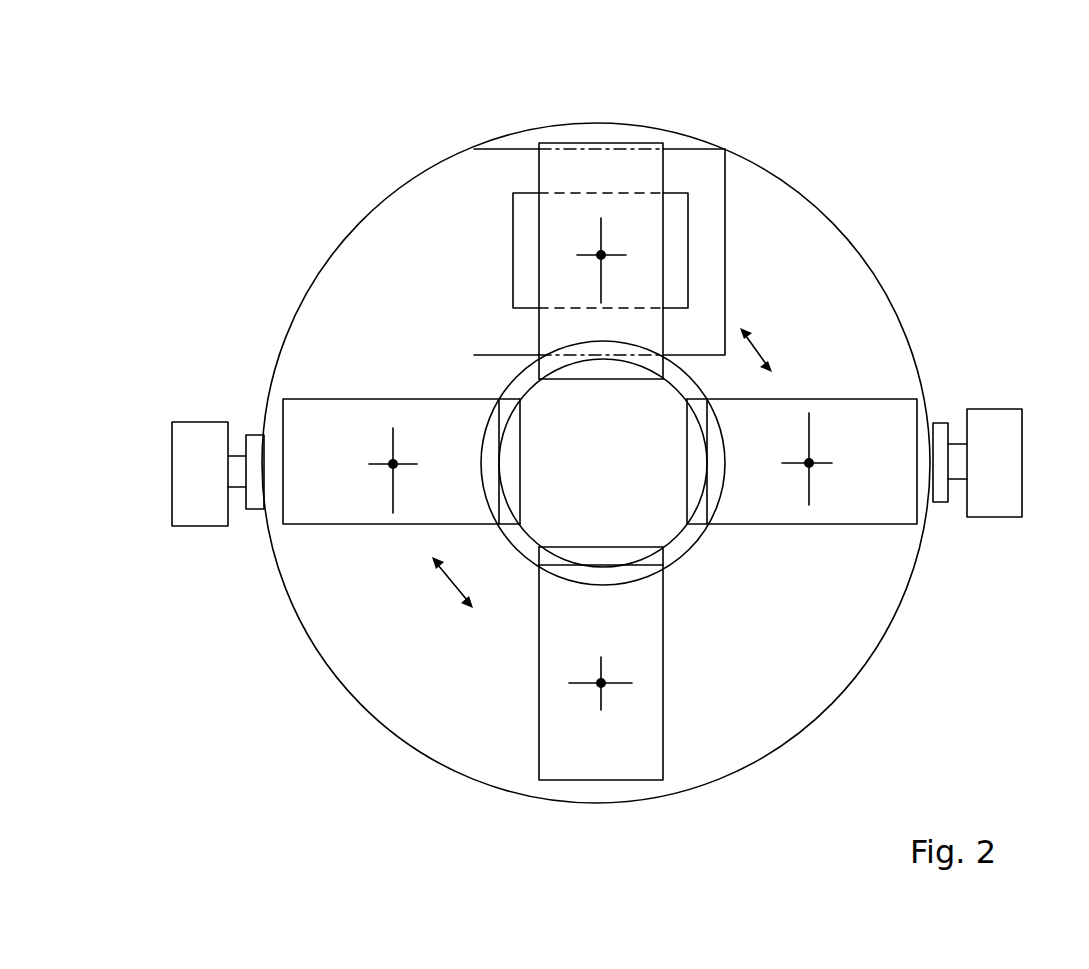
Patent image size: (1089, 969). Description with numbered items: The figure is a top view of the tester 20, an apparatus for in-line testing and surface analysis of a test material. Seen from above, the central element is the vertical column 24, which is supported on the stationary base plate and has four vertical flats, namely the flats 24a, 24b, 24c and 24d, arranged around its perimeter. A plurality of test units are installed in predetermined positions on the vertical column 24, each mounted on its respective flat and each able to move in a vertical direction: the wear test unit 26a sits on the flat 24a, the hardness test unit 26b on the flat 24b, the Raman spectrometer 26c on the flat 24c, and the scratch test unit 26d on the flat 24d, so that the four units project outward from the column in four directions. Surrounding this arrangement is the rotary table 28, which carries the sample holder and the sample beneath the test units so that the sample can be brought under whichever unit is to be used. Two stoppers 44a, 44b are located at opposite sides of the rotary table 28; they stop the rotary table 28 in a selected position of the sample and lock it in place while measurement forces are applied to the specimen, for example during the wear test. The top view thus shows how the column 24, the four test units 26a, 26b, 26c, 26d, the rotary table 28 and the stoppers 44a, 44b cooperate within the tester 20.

The tester 20 is at (290, 178).
The vertical column 24 is at (602, 443).
The vertical flat 24a is at (520, 433).
The vertical flat 24b is at (594, 378).
The vertical flat 24c is at (687, 427).
The vertical flat 24d is at (618, 548).
The wear test unit 26a is at (373, 527).
The hardness test unit 26b is at (635, 170).
The Raman spectrometer 26c is at (883, 512).
The scratch test unit 26d is at (643, 726).
The rotary table 28 is at (373, 663).
The stopper 44a is at (188, 502).
The stopper 44b is at (1010, 478).